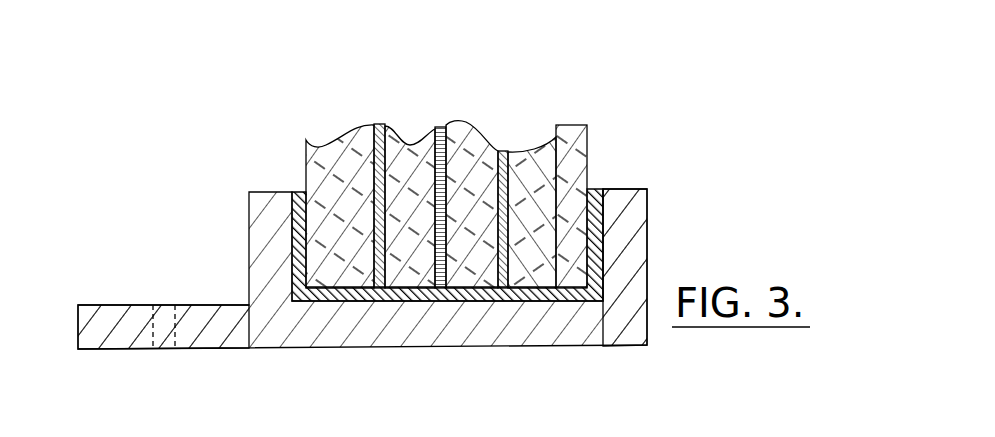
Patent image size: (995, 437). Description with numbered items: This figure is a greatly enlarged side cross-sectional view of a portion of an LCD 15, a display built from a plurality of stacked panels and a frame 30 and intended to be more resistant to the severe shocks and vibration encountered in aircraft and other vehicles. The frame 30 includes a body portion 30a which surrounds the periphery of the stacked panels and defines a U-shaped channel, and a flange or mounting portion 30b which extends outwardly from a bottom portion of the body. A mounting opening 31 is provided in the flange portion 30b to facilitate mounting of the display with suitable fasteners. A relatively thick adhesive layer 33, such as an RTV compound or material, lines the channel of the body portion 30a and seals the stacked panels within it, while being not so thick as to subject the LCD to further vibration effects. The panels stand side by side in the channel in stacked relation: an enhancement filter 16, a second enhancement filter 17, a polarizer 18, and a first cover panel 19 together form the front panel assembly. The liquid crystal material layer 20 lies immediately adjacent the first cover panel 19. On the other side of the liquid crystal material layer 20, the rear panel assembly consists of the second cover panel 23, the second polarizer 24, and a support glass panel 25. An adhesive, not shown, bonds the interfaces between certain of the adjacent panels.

The LCD 15 is at (708, 82).
The enhancement filter 16 is at (587, 143).
The second enhancement filter 17 is at (543, 139).
The polarizer 18 is at (504, 150).
The first cover panel 19 is at (472, 121).
The liquid crystal material layer 20 is at (439, 128).
The second cover panel 23 is at (412, 141).
The second polarizer 24 is at (377, 124).
The support glass panel 25 is at (320, 146).
The frame 30 is at (387, 347).
The body portion 30a is at (495, 346).
The flange or mounting portion 30b is at (100, 348).
The mounting opening 31 is at (160, 303).
The adhesive layer 33 is at (603, 187).